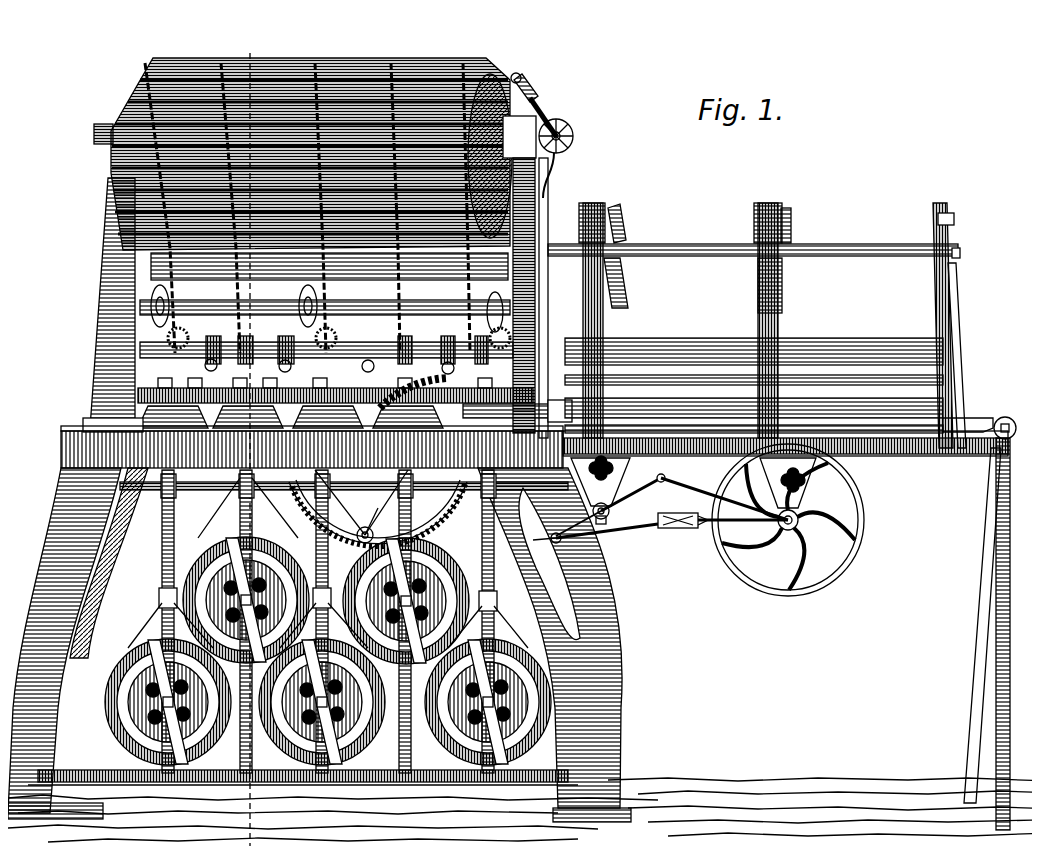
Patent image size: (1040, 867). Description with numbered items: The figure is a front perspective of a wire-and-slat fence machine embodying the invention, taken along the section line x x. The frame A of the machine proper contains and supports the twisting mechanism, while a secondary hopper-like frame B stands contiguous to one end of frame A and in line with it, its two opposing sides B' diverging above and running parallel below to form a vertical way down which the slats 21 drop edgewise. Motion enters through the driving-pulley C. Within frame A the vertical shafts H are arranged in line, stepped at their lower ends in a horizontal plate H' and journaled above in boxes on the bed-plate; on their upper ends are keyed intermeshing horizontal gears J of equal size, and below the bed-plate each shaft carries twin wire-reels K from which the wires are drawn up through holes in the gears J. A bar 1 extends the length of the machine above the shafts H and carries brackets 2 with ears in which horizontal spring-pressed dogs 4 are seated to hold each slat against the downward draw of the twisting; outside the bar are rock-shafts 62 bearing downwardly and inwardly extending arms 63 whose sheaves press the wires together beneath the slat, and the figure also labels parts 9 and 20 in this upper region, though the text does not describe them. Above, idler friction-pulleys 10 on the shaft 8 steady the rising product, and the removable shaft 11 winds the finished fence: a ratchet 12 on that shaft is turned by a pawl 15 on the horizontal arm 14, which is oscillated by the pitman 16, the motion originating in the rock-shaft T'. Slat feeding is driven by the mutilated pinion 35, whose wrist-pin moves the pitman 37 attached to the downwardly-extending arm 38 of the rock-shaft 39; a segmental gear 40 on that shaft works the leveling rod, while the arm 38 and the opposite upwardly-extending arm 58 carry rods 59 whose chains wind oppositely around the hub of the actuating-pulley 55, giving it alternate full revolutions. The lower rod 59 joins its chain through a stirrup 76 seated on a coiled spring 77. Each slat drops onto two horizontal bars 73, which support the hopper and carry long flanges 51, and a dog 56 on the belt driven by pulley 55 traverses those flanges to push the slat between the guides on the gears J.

The section line x is at (243, 442).
The removable shaft 11 is at (88, 126).
The drum end flange 20 is at (460, 148).
The ratchet 12 is at (553, 113).
The pawl 15 is at (538, 108).
The horizontal arm 14 is at (527, 90).
The pitman 16 is at (536, 170).
The shaft 8 is at (258, 298).
The friction-pulleys 10 is at (160, 290).
The brackets 2 is at (278, 334).
The gear 9 is at (172, 324).
The rock-shafts 62 is at (208, 330).
The arms 63 is at (244, 332).
The bar 1 is at (415, 335).
The dogs 4 is at (272, 362).
The horizontal gears J is at (335, 402).
The mutilated pinion 35 is at (494, 458).
The frame A is at (319, 500).
The cross shaft N is at (176, 478).
The rock-shaft T' is at (303, 504).
The driving-pulley C is at (378, 513).
The horizontal flange 51 is at (349, 532).
The vertical shafts H is at (328, 621).
The wire-reels K is at (422, 566).
The horizontal plate H' is at (303, 785).
The hopper B is at (785, 407).
The slats 21 is at (648, 330).
The hopper sides B' is at (779, 316).
The segmental gear 40 is at (605, 505).
The upwardly-extending arm 58 is at (633, 492).
The rods 59 is at (600, 530).
The stirrup 76 is at (668, 506).
The coiled spring 77 is at (672, 520).
The pitman 37 is at (542, 534).
The downwardly-extending arm 38 is at (570, 524).
The rock-shaft 39 is at (594, 518).
The horizontal bars 73 is at (752, 510).
The actuating-pulley 55 is at (856, 510).
The dog 56 is at (980, 408).